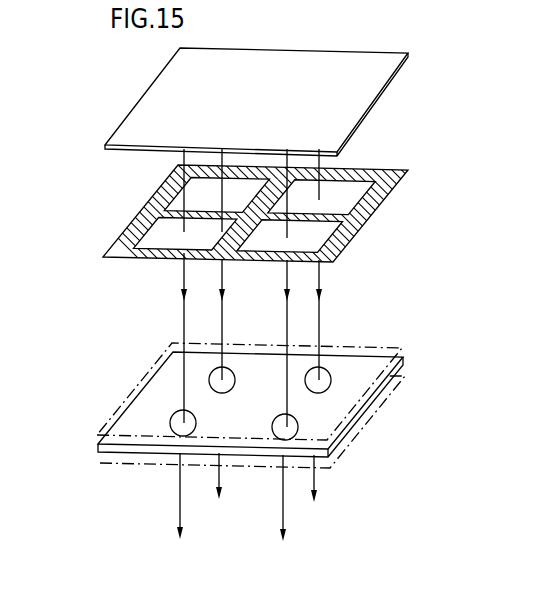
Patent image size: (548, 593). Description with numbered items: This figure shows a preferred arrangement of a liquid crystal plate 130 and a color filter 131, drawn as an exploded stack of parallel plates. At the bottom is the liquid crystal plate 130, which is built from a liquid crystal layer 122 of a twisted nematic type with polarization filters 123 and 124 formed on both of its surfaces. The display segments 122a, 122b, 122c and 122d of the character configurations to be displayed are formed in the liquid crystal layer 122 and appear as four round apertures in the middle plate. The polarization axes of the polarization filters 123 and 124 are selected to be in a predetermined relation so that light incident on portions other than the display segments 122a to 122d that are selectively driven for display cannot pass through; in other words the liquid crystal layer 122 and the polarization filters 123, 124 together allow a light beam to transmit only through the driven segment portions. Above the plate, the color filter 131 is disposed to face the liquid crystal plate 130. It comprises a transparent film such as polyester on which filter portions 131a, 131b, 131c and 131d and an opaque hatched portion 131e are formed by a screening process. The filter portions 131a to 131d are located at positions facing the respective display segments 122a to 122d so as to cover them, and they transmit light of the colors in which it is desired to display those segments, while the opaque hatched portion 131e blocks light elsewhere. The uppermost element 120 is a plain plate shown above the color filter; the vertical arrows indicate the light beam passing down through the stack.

The cover plate 120 is at (409, 58).
The color filter 131 is at (400, 173).
The filter portion 131a is at (185, 195).
The filter portion 131b is at (155, 234).
The filter portion 131c is at (355, 190).
The filter portion 131d is at (338, 238).
The opaque hatched portion 131e is at (352, 212).
The liquid crystal layer 122 is at (278, 410).
The display segment 122a is at (230, 371).
The display segment 122b is at (170, 434).
The display segment 122c is at (327, 372).
The display segment 122d is at (298, 427).
The polarization filter 123 is at (408, 347).
The polarization filter 124 is at (388, 402).
The liquid crystal plate 130 is at (262, 410).